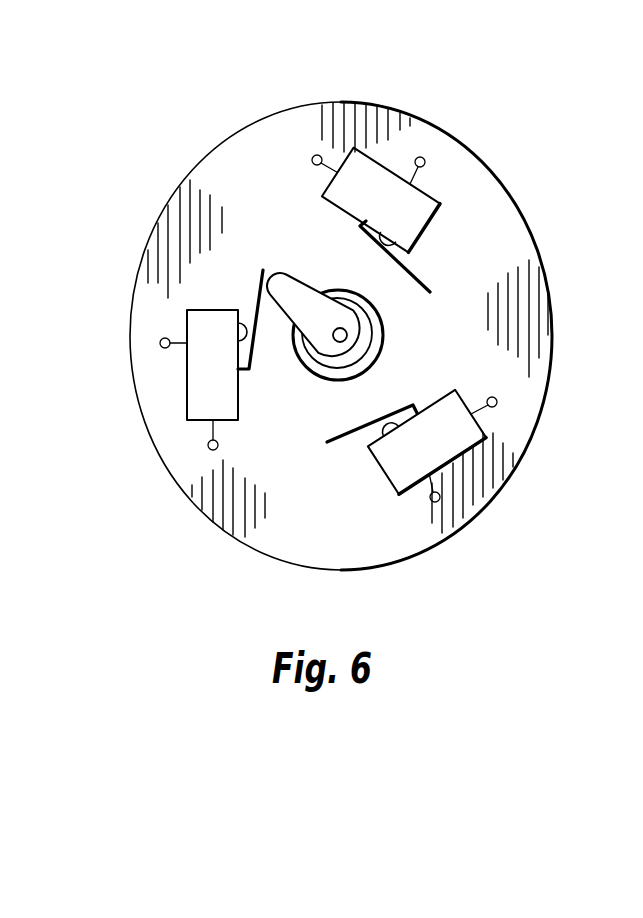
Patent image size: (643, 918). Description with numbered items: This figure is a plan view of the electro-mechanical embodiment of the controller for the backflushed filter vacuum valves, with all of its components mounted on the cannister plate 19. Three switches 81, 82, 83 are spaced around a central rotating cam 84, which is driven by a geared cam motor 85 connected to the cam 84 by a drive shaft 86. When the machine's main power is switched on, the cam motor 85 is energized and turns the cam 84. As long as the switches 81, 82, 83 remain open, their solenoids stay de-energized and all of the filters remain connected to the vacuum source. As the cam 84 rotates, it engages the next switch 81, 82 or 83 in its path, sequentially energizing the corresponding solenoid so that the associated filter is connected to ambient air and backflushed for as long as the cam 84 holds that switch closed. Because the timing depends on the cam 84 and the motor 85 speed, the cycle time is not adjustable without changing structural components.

The cannister plate 19 is at (192, 170).
The switch 81 is at (190, 410).
The switch 82 is at (412, 212).
The switch 83 is at (397, 472).
The cam 84 is at (292, 292).
The geared cam motor 85 is at (383, 327).
The drive shaft 86 is at (339, 345).